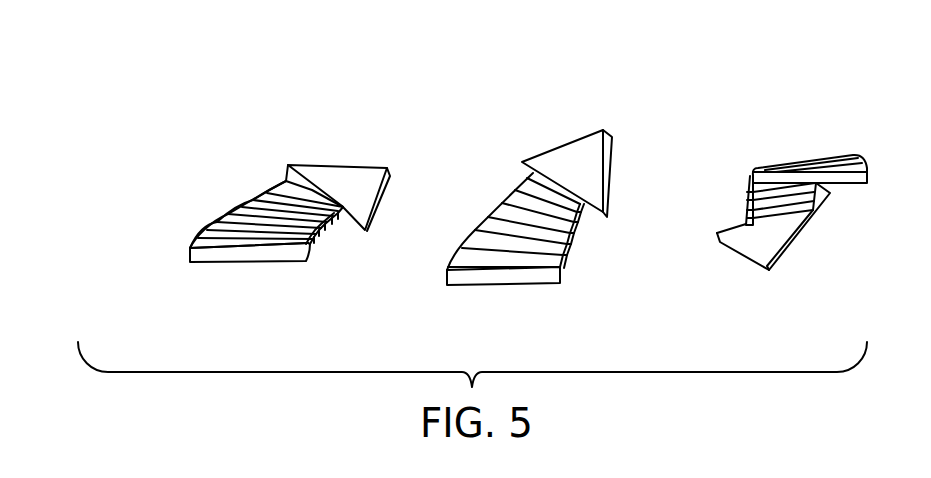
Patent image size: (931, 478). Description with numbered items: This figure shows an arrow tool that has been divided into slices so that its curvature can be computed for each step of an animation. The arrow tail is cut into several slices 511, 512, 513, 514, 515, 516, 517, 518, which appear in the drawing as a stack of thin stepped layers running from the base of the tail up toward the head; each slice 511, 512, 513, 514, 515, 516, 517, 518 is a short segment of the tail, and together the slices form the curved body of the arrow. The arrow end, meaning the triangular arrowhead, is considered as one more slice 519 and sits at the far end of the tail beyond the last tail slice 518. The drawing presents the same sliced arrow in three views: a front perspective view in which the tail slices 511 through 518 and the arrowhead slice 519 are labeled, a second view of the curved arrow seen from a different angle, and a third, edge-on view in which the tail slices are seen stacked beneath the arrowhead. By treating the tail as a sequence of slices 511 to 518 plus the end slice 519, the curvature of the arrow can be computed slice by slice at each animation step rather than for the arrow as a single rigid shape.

The slice 511 is at (197, 243).
The slice 512 is at (207, 229).
The slice 513 is at (218, 220).
The slice 514 is at (230, 213).
The slice 515 is at (245, 205).
The slice 516 is at (262, 195).
The slice 517 is at (288, 184).
The slice 518 is at (312, 187).
The arrow end slice 519 is at (350, 178).